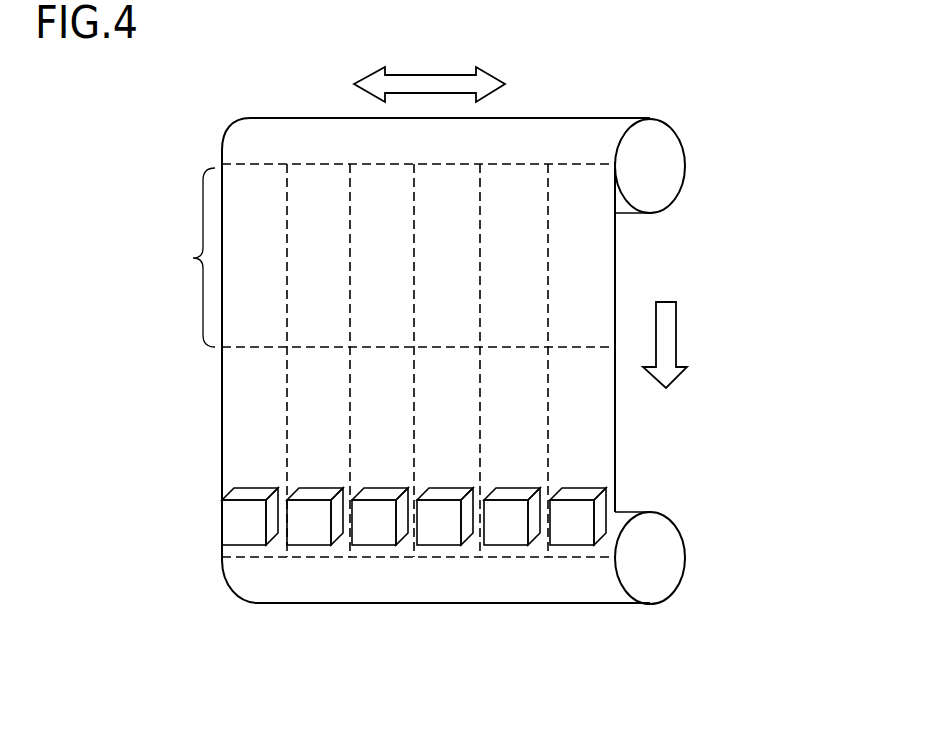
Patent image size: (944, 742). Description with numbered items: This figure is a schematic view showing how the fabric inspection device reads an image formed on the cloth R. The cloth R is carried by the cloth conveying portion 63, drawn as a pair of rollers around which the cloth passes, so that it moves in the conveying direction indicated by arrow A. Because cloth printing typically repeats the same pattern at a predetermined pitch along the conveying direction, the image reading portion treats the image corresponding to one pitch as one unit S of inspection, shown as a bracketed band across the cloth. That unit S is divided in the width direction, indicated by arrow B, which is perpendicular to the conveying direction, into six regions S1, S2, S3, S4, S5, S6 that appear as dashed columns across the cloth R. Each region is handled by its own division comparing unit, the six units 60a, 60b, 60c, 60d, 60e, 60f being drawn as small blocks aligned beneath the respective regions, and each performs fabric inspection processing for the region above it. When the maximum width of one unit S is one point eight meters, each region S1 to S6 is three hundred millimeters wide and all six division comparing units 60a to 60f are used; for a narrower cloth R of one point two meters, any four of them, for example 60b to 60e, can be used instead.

The cloth conveying portion 63 is at (677, 172).
The cloth R is at (615, 455).
The unit of inspection S is at (191, 257).
The region S1 is at (581, 255).
The region S2 is at (514, 255).
The region S3 is at (447, 255).
The region S4 is at (382, 255).
The region S5 is at (318, 255).
The region S6 is at (254, 255).
The conveying direction A is at (673, 345).
The width direction B is at (433, 84).
The division comparing unit 60a is at (574, 535).
The division comparing unit 60b is at (508, 535).
The division comparing unit 60c is at (440, 533).
The division comparing unit 60d is at (373, 533).
The division comparing unit 60e is at (308, 533).
The division comparing unit 60f is at (242, 533).